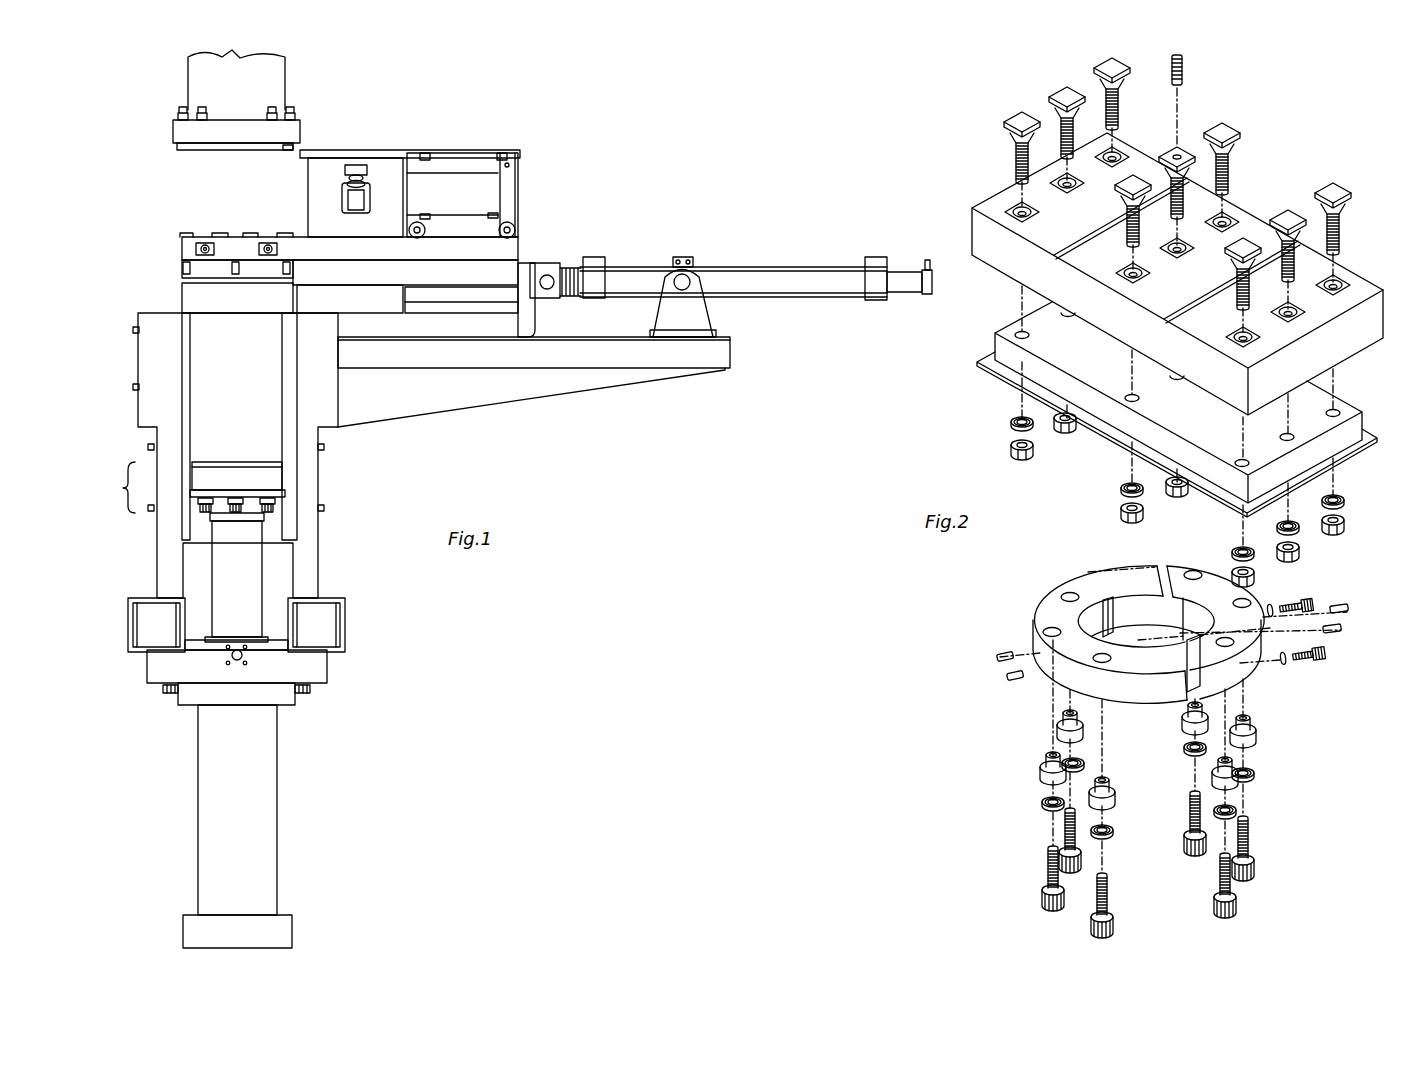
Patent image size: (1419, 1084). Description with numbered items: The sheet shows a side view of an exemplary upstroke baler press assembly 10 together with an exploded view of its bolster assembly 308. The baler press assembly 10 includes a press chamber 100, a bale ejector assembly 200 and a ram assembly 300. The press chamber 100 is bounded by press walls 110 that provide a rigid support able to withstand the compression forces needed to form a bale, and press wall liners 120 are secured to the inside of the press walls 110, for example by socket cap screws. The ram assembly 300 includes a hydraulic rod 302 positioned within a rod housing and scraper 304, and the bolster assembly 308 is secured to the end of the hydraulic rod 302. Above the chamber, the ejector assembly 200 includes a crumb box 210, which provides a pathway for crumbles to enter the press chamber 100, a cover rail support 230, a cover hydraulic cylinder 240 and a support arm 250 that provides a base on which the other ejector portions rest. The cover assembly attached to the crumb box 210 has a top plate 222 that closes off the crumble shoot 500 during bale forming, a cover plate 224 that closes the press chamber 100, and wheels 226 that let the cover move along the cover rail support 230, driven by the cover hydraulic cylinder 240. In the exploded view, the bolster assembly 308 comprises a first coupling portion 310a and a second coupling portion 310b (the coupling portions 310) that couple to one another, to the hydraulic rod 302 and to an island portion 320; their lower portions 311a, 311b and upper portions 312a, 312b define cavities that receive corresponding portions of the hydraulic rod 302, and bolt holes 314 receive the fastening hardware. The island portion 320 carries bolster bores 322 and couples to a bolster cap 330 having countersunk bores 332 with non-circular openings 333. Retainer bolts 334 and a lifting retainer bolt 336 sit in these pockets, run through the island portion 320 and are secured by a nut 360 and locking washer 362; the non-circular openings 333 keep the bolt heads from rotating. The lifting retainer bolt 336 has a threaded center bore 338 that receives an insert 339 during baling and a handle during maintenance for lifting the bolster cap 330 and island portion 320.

In FIG. 1, the baler press assembly 10 is at (481, 501).
In FIG. 1, the press chamber 100 is at (184, 455).
In FIG. 1, the press walls 110 is at (148, 408).
In FIG. 1, the press wall liners 120 is at (184, 362).
In FIG. 1, the bale ejector assembly 200 is at (394, 250).
In FIG. 1, the crumb box 210 is at (341, 155).
In FIG. 1, the top plate 222 is at (443, 153).
In FIG. 1, the cover plate 224 is at (475, 299).
In FIG. 1, the wheels 226 is at (516, 229).
In FIG. 1, the cover rail support 230 is at (512, 249).
In FIG. 1, the cover hydraulic cylinder 240 is at (793, 272).
In FIG. 1, the support arm 250 is at (575, 357).
In FIG. 1, the ram assembly 300 is at (244, 699).
In FIG. 1, the hydraulic rod 302 is at (228, 587).
In FIG. 1, the rod housing and scraper 304 is at (290, 638).
In FIG. 1, the bolster assembly 308 is at (240, 495).
In FIG. 1, the coupling portion 310 is at (215, 513).
In FIG. 2, the first coupling portion 310a is at (1087, 614).
In FIG. 2, the second coupling portion 310b is at (1249, 602).
In FIG. 2, the lower portion 311a is at (1126, 632).
In FIG. 2, the lower portion 311b is at (1202, 617).
In FIG. 2, the upper portion 312a is at (1108, 632).
In FIG. 2, the upper portion 312b is at (1183, 598).
In FIG. 2, the flange bolt hole 314 is at (1044, 620).
In FIG. 1, the island portion 320 is at (278, 494).
In FIG. 2, the island portion 320 is at (1183, 397).
In FIG. 2, the bolster bores 322 is at (1338, 408).
In FIG. 1, the bolster cap 330 is at (276, 478).
In FIG. 2, the bolster cap 330 is at (1175, 274).
In FIG. 2, the countersunk bores 332 is at (1226, 218).
In FIG. 2, the non-circular openings 333 is at (1011, 205).
In FIG. 2, the retainer bolt 334 is at (1335, 192).
In FIG. 2, the lifting retainer bolt 336 is at (1201, 152).
In FIG. 2, the threaded center bore 338 is at (1175, 155).
In FIG. 2, the insert 339 is at (1184, 72).
In FIG. 2, the nut 360 is at (1010, 450).
In FIG. 2, the locking washer 362 is at (1010, 424).
In FIG. 1, the crumble shoot 500 is at (200, 83).